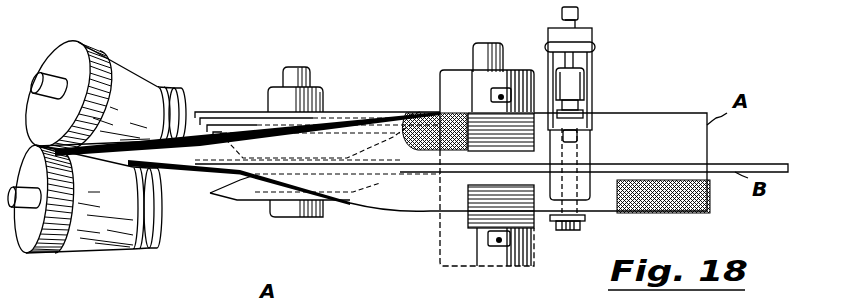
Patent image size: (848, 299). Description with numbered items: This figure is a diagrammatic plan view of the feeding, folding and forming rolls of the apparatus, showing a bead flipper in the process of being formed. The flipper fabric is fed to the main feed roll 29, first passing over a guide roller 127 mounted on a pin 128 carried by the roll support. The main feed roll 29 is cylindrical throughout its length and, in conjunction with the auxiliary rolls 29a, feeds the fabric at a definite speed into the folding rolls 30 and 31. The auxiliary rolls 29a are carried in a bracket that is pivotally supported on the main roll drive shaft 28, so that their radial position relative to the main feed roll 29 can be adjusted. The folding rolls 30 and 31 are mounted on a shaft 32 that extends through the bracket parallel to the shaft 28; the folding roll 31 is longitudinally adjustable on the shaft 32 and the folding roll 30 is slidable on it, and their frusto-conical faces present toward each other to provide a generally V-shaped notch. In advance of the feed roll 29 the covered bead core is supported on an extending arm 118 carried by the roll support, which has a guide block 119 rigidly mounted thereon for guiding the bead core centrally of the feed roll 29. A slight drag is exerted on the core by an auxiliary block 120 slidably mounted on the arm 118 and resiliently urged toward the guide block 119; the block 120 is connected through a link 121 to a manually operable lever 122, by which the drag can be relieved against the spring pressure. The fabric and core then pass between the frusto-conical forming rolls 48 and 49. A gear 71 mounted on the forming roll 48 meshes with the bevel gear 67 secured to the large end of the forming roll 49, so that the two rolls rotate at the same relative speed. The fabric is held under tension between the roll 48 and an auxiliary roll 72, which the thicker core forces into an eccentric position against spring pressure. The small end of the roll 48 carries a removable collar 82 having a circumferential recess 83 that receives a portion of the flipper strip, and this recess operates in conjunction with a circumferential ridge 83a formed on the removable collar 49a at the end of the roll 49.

The forming roll 48 is at (131, 75).
The gear 71 is at (60, 62).
The circumferential recess 83 is at (164, 88).
The removable collar 82 is at (179, 96).
The forming roll 49 is at (86, 236).
The removable collar 49a is at (117, 244).
The bevel gear 67 is at (30, 238).
The circumferential ridge 83a is at (142, 201).
The auxiliary roll 72 is at (160, 240).
The folding roll 31 is at (360, 150).
The shaft 32 is at (312, 74).
The folding roll 30 is at (249, 200).
The main feed roll 29 is at (449, 88).
The auxiliary rolls 29a is at (473, 82).
The shaft 28 is at (476, 55).
The manually operable lever 122 is at (588, 74).
The extending arm 118 is at (588, 92).
The link 121 is at (588, 108).
The auxiliary block 120 is at (590, 150).
The guide block 119 is at (590, 198).
The guide roller 127 is at (585, 220).
The pin 128 is at (568, 232).